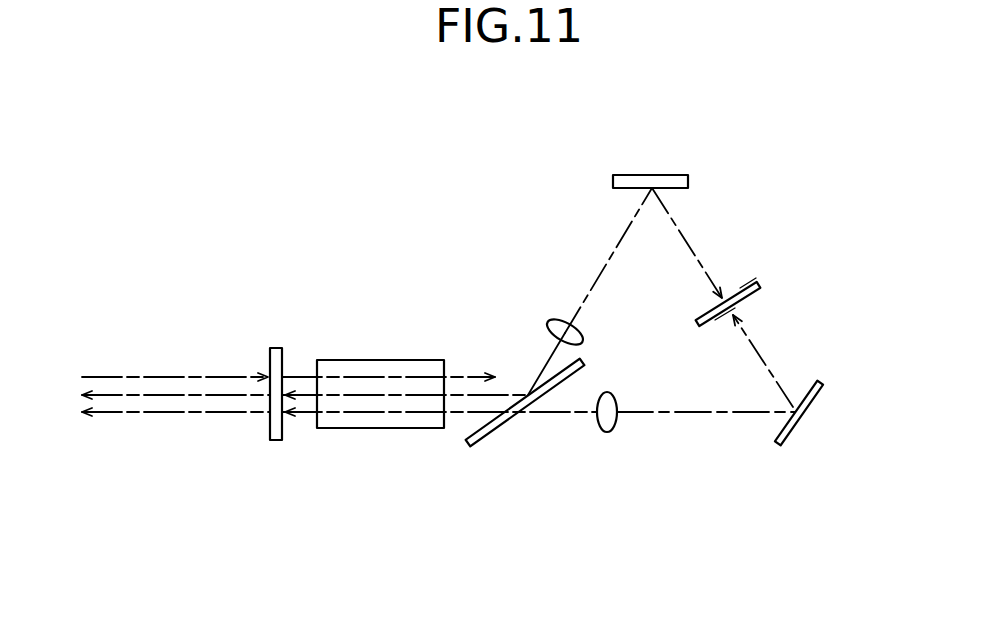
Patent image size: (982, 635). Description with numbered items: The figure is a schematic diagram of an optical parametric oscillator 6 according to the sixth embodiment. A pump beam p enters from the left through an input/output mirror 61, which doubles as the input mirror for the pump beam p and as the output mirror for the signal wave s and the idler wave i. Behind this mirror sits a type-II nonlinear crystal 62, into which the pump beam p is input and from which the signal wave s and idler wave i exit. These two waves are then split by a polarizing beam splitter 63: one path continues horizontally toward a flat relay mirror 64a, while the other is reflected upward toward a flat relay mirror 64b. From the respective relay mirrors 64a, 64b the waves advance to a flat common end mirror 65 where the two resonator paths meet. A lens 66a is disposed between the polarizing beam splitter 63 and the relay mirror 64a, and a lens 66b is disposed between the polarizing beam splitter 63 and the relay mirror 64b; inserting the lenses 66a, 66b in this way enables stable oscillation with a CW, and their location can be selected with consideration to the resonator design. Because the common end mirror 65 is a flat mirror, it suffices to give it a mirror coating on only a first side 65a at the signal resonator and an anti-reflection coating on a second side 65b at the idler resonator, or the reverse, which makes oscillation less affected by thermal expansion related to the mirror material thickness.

The optical parametric oscillator 6 is at (365, 233).
The input/output mirror 61 is at (283, 430).
The type-II nonlinear crystal 62 is at (385, 428).
The polarizing beam splitter 63 is at (503, 427).
The flat relay mirror 64a is at (803, 418).
The flat relay mirror 64b is at (655, 175).
The flat common end mirror 65 is at (755, 285).
The first side of common end mirror 65a is at (745, 307).
The second side of common end mirror 65b is at (750, 289).
The lens 66a is at (613, 418).
The lens 66b is at (558, 322).
The pump beam p is at (167, 377).
The idler wave i is at (140, 395).
The signal wave s is at (203, 412).